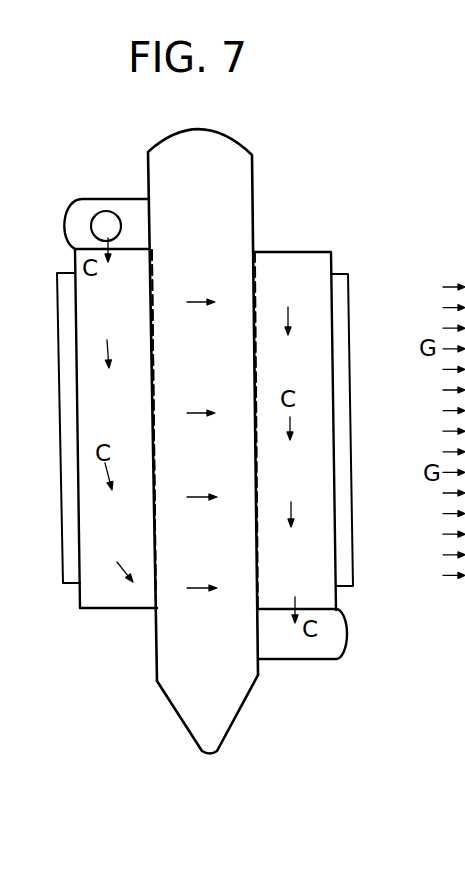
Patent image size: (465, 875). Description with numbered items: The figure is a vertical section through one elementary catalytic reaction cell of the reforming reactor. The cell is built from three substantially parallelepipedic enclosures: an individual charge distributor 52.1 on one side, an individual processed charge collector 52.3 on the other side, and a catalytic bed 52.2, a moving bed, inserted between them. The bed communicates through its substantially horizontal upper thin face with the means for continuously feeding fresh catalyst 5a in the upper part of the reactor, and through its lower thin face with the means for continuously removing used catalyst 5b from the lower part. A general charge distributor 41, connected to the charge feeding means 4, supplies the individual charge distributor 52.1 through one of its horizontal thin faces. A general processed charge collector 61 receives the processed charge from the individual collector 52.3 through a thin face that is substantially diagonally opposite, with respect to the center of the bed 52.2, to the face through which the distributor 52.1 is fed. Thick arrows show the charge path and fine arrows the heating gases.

The charge feeding means 4 is at (105, 211).
The general charge distributor 41 is at (70, 228).
The fresh catalyst feeding means 5a is at (242, 213).
The used catalyst removing means 5b is at (187, 702).
The individual charge distributor 52.1 is at (92, 582).
The catalytic bed 52.2 is at (173, 578).
The individual processed charge collector 52.3 is at (327, 593).
The general processed charge collector 61 is at (295, 650).